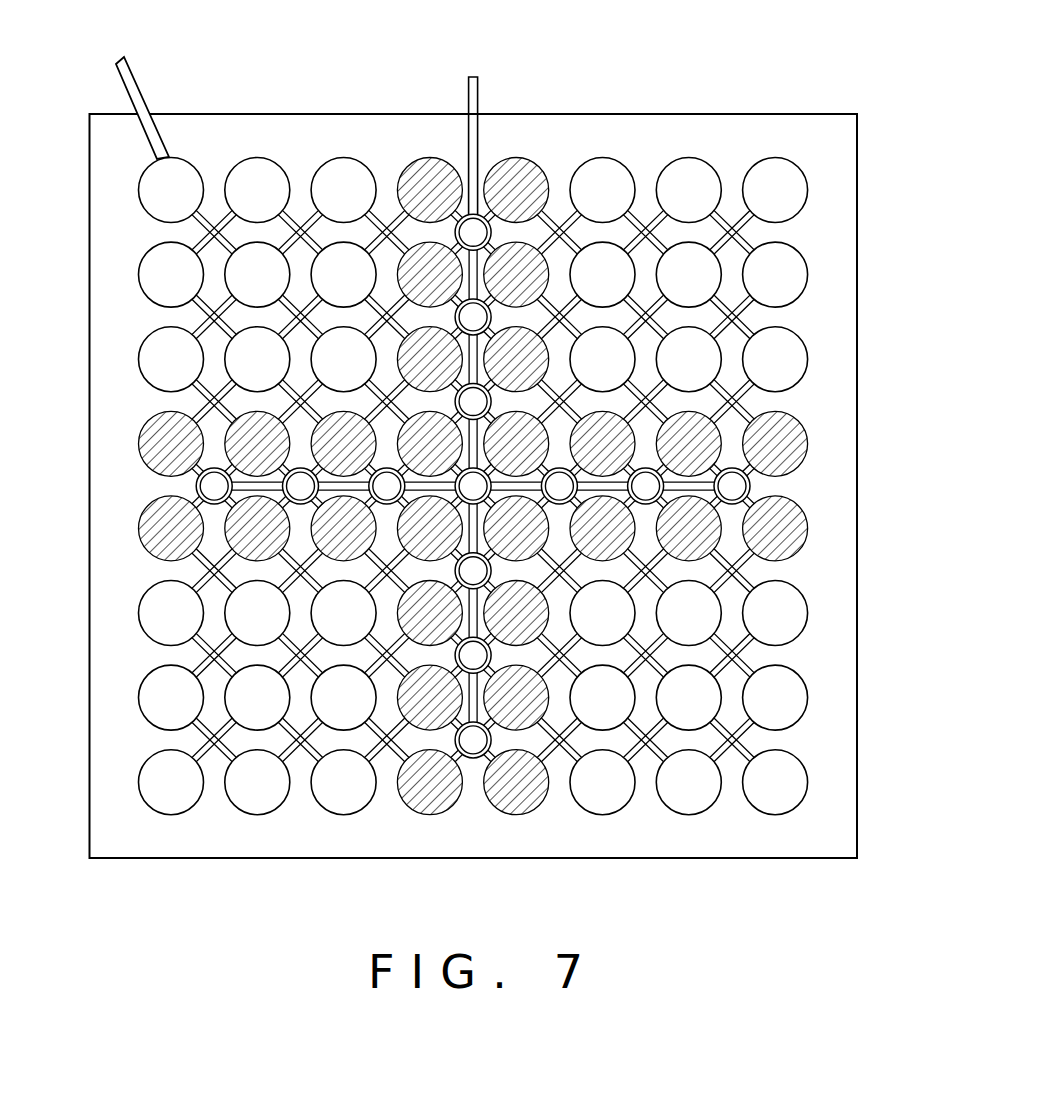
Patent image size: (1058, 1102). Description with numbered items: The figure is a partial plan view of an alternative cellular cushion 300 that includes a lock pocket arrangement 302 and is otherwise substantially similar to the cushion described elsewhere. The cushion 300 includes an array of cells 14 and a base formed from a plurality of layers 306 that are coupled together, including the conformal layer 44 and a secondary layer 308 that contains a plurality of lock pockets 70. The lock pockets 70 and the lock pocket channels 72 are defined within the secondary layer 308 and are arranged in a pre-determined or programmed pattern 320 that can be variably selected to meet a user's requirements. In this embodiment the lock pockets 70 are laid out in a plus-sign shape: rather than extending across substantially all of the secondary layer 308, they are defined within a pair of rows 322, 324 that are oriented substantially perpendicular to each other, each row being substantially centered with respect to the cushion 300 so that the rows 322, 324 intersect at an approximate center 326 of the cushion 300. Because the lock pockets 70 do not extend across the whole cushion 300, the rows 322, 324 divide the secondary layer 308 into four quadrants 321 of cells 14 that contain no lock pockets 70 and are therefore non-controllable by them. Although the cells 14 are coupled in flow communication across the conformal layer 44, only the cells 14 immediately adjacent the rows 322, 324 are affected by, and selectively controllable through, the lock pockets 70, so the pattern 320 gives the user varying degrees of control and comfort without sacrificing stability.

The cells 14 is at (138, 352).
The conformal layer 44 is at (368, 114).
The lock pockets 70 is at (475, 218).
The lock pocket channels 72 is at (455, 262).
The cellular cushion 300 is at (253, 75).
The lock pocket arrangement 302 is at (610, 93).
The layers 306 is at (262, 830).
The secondary layer 308 is at (800, 825).
The pattern 320 is at (70, 634).
The quadrants 321 is at (303, 150).
The row 322 is at (443, 95).
The row 324 is at (800, 485).
The center 326 is at (468, 490).